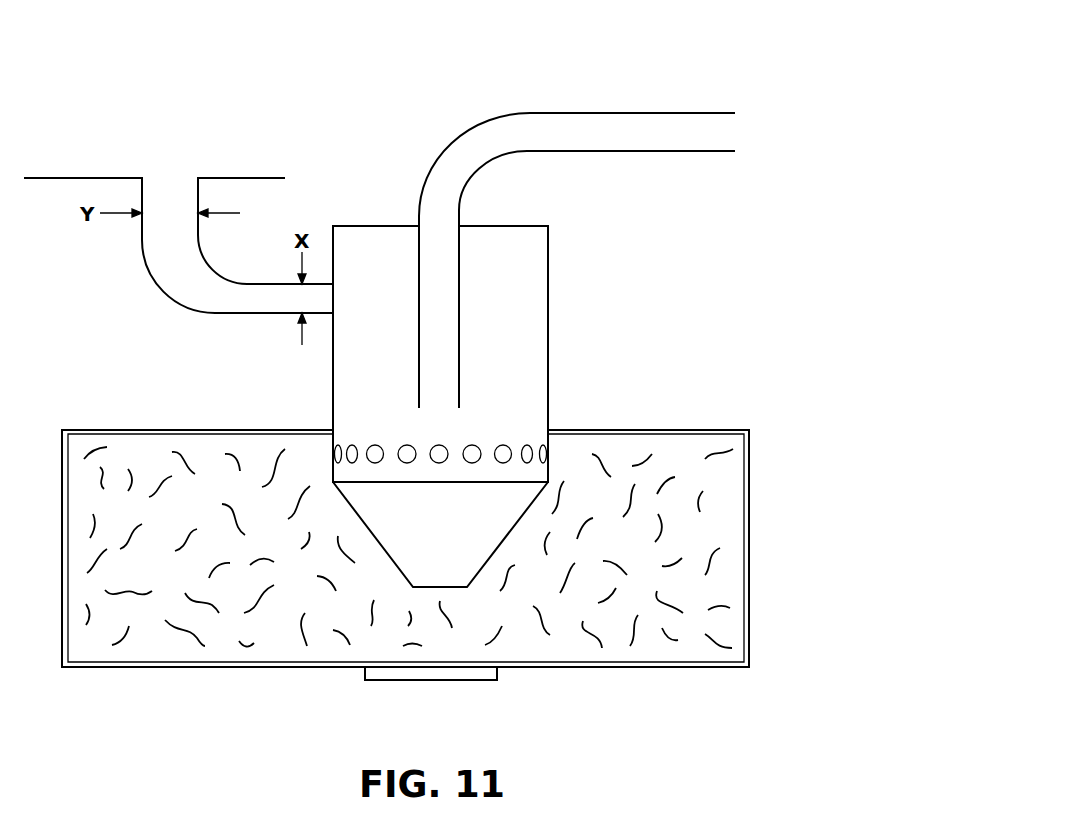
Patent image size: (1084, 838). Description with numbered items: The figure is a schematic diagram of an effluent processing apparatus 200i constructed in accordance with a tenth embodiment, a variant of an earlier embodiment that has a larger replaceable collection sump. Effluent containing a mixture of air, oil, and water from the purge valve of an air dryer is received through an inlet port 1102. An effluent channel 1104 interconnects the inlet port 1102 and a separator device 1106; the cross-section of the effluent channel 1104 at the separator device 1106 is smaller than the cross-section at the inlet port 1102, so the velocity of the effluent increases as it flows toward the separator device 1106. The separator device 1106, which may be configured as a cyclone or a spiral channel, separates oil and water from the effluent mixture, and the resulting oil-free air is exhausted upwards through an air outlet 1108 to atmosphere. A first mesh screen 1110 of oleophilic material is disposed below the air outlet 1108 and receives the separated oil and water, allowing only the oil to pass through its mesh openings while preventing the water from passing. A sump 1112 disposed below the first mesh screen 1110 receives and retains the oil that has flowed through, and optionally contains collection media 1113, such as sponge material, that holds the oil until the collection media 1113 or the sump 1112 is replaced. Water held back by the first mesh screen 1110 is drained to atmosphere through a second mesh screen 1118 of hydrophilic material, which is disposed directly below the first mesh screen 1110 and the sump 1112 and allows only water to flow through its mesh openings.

The effluent processing apparatus 200i is at (802, 102).
The inlet port 1102 is at (173, 187).
The effluent channel 1104 is at (242, 298).
The separator device 1106 is at (548, 318).
The air outlet 1108 is at (503, 135).
The first mesh screen 1110 is at (512, 527).
The sump 1112 is at (251, 667).
The collection media 1113 is at (617, 620).
The second mesh screen 1118 is at (440, 675).